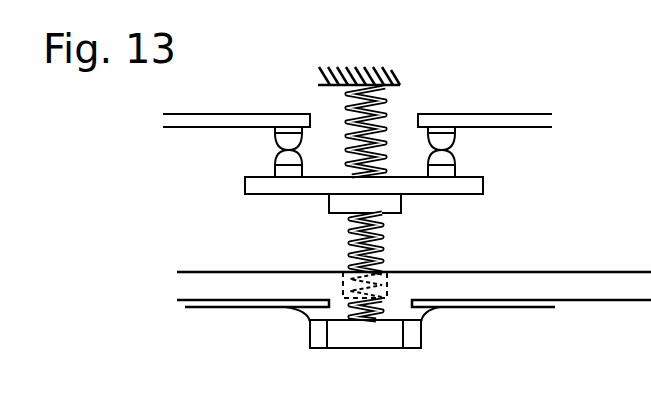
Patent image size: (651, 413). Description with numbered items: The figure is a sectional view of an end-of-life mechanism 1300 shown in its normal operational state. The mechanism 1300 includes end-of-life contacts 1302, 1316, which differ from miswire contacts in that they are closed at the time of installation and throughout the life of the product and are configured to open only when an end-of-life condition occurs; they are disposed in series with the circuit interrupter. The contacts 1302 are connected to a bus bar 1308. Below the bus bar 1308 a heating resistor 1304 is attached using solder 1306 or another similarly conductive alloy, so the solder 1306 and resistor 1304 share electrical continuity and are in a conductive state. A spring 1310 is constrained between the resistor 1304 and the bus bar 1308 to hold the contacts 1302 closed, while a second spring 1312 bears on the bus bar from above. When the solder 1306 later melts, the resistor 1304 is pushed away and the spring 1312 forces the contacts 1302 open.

The end-of-life mechanism 1300 is at (437, 73).
The end-of-life contacts 1302 is at (487, 152).
The heating resistor 1304 is at (362, 348).
The solder 1306 is at (430, 311).
The bus bar 1308 is at (252, 197).
The spring 1310 is at (383, 233).
The spring 1312 is at (350, 114).
The end-of-life contacts 1316 is at (272, 137).